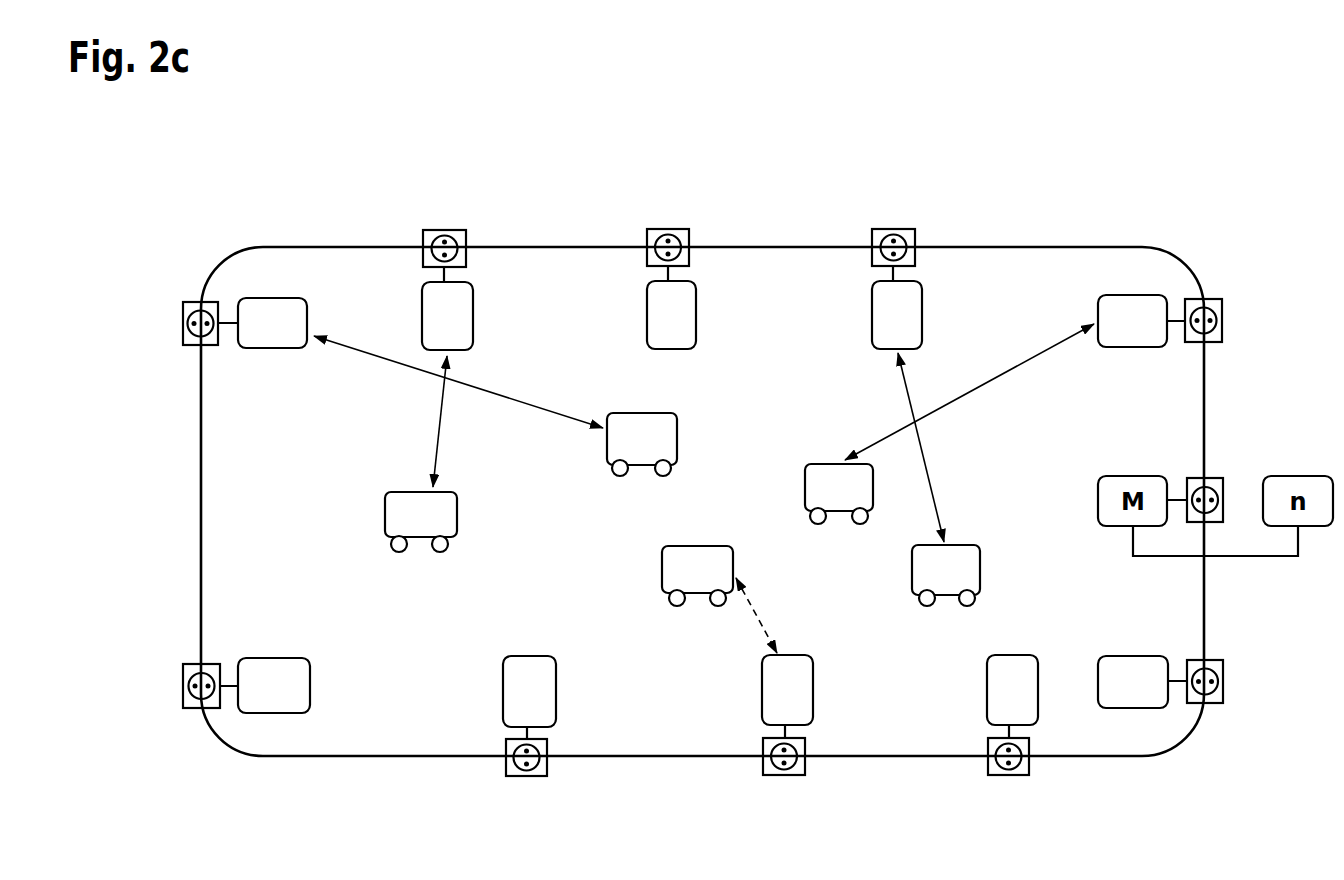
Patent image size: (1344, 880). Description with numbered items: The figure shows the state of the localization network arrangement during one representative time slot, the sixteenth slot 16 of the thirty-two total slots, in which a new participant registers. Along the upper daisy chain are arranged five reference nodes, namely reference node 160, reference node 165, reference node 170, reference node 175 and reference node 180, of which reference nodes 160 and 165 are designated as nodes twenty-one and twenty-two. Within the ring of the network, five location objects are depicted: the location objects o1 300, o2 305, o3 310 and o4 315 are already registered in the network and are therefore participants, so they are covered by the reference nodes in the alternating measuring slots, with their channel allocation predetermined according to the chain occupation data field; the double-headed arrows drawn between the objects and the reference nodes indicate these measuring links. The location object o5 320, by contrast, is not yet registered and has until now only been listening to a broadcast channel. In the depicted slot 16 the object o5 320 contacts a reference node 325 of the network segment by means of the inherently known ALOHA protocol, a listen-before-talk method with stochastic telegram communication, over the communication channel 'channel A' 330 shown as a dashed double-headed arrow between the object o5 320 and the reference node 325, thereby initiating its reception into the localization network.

The slot 16 is at (653, 501).
The reference node 160 is at (1130, 348).
The reference node 165 is at (922, 333).
The reference node 170 is at (696, 333).
The reference node 175 is at (473, 318).
The reference node 180 is at (272, 348).
The location object 300 is at (405, 490).
The location object 305 is at (605, 437).
The location object 310 is at (803, 487).
The location object 315 is at (980, 568).
The location object 320 is at (660, 570).
The reference node 325 is at (760, 685).
The communication channel 330 is at (766, 630).